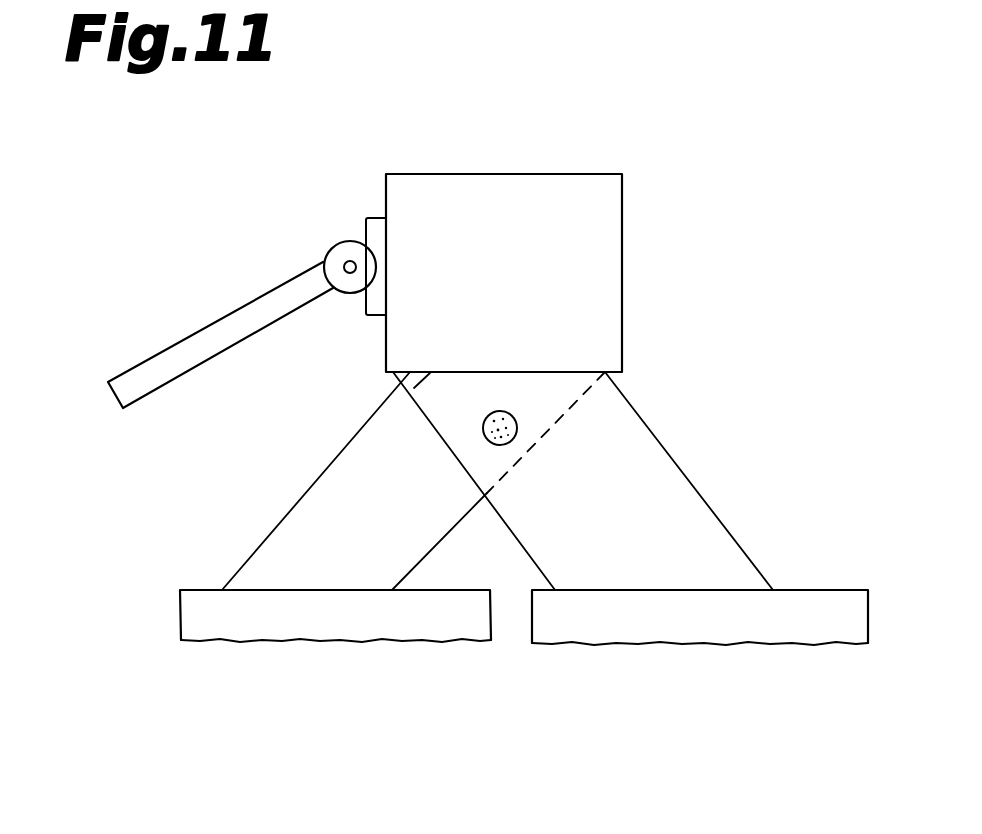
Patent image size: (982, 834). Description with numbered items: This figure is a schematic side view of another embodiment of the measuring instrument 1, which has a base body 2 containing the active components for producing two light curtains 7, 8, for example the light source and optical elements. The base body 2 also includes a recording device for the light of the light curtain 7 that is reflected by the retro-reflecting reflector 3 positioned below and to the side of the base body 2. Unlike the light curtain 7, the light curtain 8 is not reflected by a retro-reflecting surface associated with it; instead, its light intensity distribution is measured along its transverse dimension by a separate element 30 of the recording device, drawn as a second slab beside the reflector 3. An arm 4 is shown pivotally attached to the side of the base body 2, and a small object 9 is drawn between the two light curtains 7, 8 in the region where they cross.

The measuring instrument 1 is at (788, 195).
The base body 2 is at (532, 203).
The retro-reflecting reflector 3 is at (730, 613).
The pivotable arm 4 is at (160, 364).
The light curtain 7 is at (688, 525).
The light curtain 8 is at (305, 524).
The particle / droplet 9 is at (513, 437).
The separate element of the recording device 30 is at (293, 617).